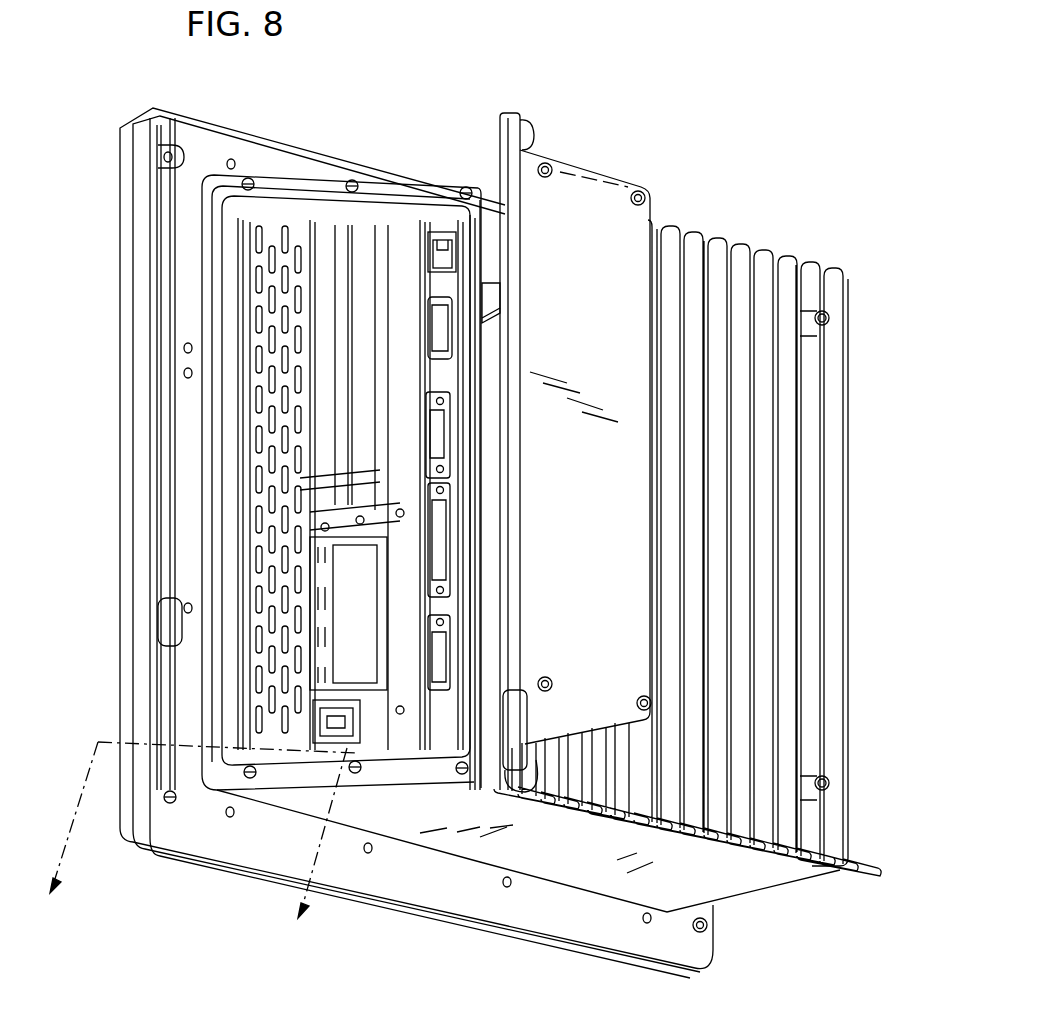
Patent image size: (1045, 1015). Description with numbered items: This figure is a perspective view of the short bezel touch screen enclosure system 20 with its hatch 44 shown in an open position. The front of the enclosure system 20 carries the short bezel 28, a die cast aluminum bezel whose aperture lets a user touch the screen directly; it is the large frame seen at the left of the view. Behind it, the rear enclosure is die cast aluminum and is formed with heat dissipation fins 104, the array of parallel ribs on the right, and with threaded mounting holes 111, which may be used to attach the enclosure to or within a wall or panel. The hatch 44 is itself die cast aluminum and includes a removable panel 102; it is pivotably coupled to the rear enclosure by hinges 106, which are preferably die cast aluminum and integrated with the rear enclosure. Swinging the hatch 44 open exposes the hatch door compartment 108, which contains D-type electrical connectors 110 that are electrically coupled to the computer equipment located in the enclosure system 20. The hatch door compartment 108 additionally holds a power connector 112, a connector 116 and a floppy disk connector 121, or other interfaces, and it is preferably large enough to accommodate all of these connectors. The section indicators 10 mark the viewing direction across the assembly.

The section line / viewing direction 10 is at (203, 835).
The touch screen enclosure system 20 is at (756, 172).
The short bezel 28 is at (217, 858).
The hatch 44 is at (585, 173).
The removable panel 102 is at (633, 488).
The heat dissipation fins 104 is at (824, 432).
The hinges 106 is at (486, 292).
The hatch door compartment 108 is at (402, 728).
The D-type electrical connectors 110 is at (435, 438).
The threaded mounting holes 111 is at (236, 158).
The power connector 112 is at (340, 742).
The connector 116 is at (441, 252).
The floppy disk connector 121 is at (452, 358).